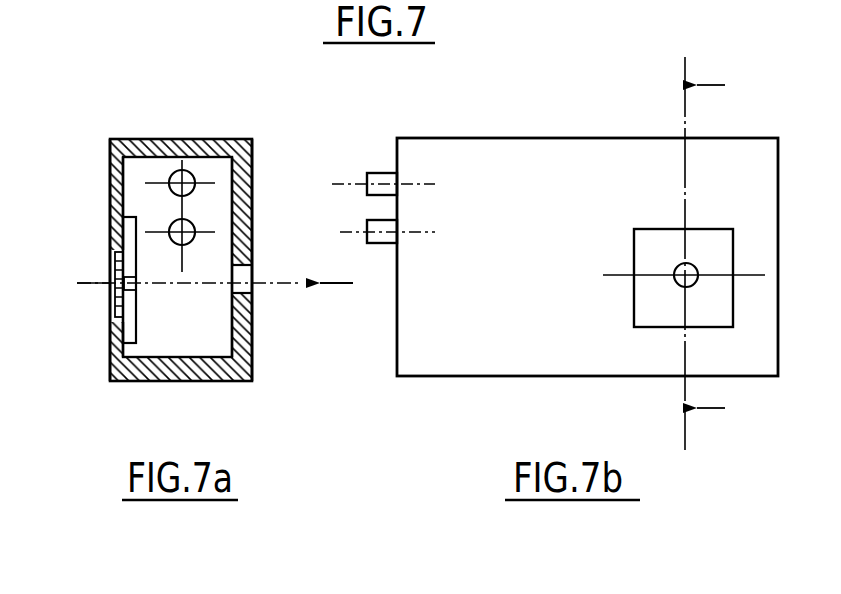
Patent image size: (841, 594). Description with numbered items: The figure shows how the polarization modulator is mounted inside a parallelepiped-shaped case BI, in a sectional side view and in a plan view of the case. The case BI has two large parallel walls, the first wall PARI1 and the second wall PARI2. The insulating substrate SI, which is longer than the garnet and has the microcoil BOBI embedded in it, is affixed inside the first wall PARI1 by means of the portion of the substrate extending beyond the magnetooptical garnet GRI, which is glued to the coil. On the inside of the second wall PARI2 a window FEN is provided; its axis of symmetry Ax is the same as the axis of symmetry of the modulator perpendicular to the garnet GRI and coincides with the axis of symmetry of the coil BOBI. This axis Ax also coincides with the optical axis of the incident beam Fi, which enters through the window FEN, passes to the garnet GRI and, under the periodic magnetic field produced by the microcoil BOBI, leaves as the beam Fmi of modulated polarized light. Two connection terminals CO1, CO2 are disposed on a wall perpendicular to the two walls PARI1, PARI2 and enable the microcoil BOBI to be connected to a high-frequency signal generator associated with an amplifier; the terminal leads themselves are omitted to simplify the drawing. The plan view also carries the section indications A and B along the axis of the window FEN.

In FIG. 7A, the case BI is at (207, 139).
In FIG. 7B, the case BI is at (587, 229).
In FIG. 7A, the first large wall PARI1 is at (110, 193).
In FIG. 7B, the first large wall PARI1 is at (587, 257).
In FIG. 7A, the second wall PARI2 is at (252, 195).
In FIG. 7B, the second wall PARI2 is at (587, 257).
In FIG. 7A, the first connection terminal CO1 is at (172, 171).
In FIG. 7B, the first connection terminal CO1 is at (383, 173).
In FIG. 7A, the second connection terminal CO2 is at (192, 222).
In FIG. 7B, the second connection terminal CO2 is at (372, 221).
In FIG. 7A, the window FEN is at (253, 271).
In FIG. 7B, the window FEN is at (676, 284).
In FIG. 7A, the magnetooptical garnet GRI is at (114, 279).
In FIG. 7A, the substrate SI is at (136, 325).
In FIG. 7A, the microcoil BOBI is at (137, 285).
In FIG. 7A, the axis of symmetry Ax is at (290, 284).
In FIG. 7A, the modulated polarized light beam Fmi is at (84, 284).
In FIG. 7A, the incident beam Fi is at (347, 282).
In FIG. 7B, the section direction A is at (705, 253).
In FIG. 7B, the section direction B is at (711, 395).